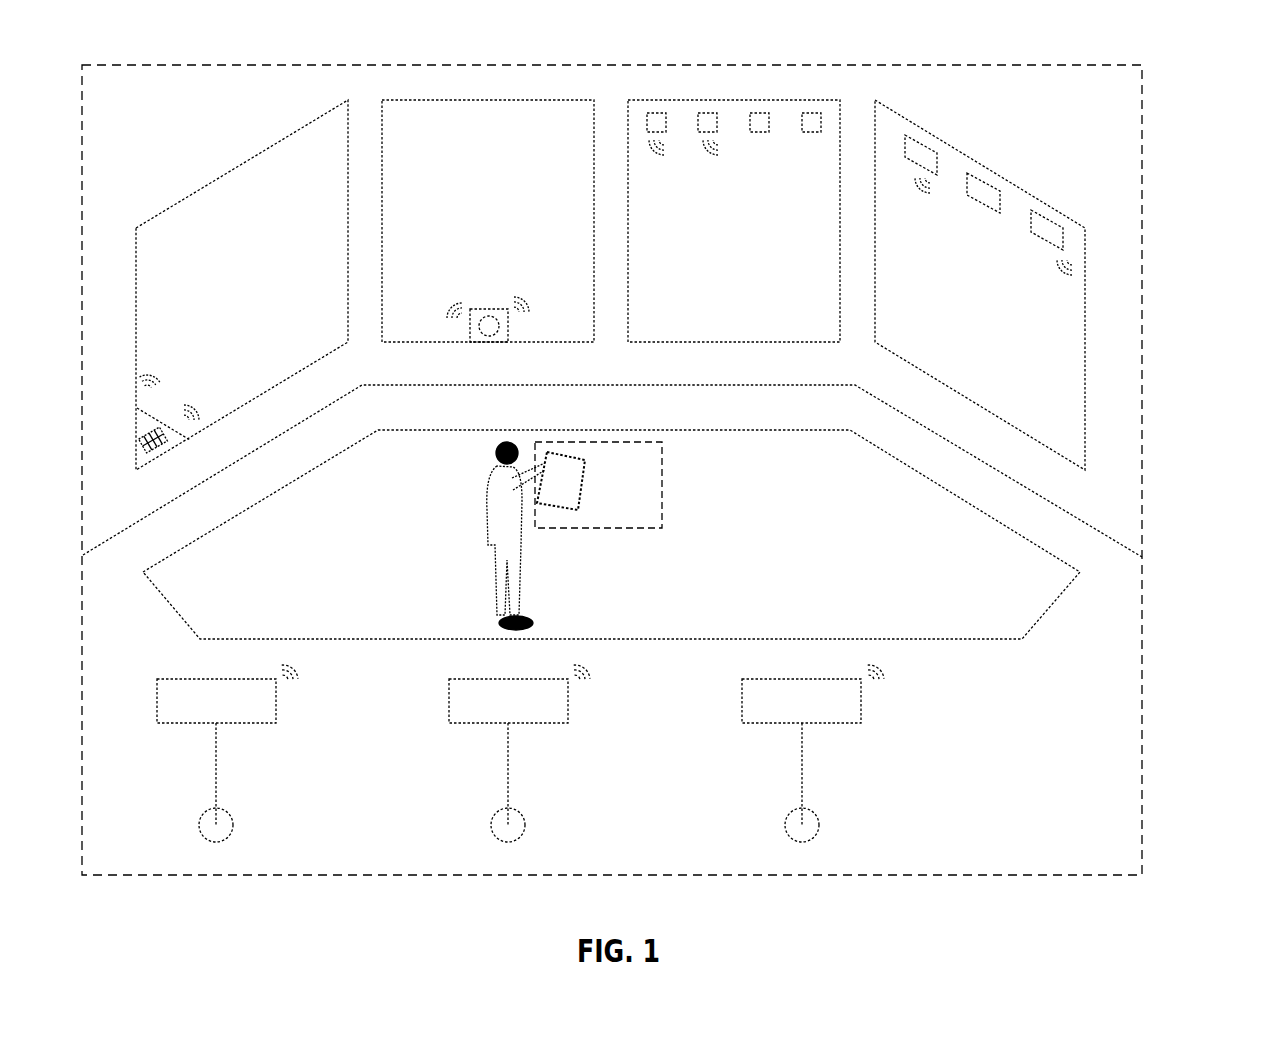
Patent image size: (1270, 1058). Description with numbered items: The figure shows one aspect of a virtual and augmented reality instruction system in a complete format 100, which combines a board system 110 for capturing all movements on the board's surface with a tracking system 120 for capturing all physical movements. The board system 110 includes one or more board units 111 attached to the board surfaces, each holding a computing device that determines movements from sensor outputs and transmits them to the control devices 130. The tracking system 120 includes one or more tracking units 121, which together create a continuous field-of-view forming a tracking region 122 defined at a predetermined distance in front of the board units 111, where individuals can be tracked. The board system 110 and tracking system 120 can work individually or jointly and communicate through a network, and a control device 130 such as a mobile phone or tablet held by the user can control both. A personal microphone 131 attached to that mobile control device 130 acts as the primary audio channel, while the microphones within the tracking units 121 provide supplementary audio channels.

The virtual and augmented reality instruction system in a complete format 100 is at (1178, 126).
The board system 110 is at (1028, 162).
The board unit 111 is at (158, 247).
The tracking system 120 is at (614, 752).
The tracking unit 121 is at (216, 793).
The tracking region 122 is at (1003, 585).
The control device 130 is at (563, 490).
The personal microphone 131 is at (551, 455).